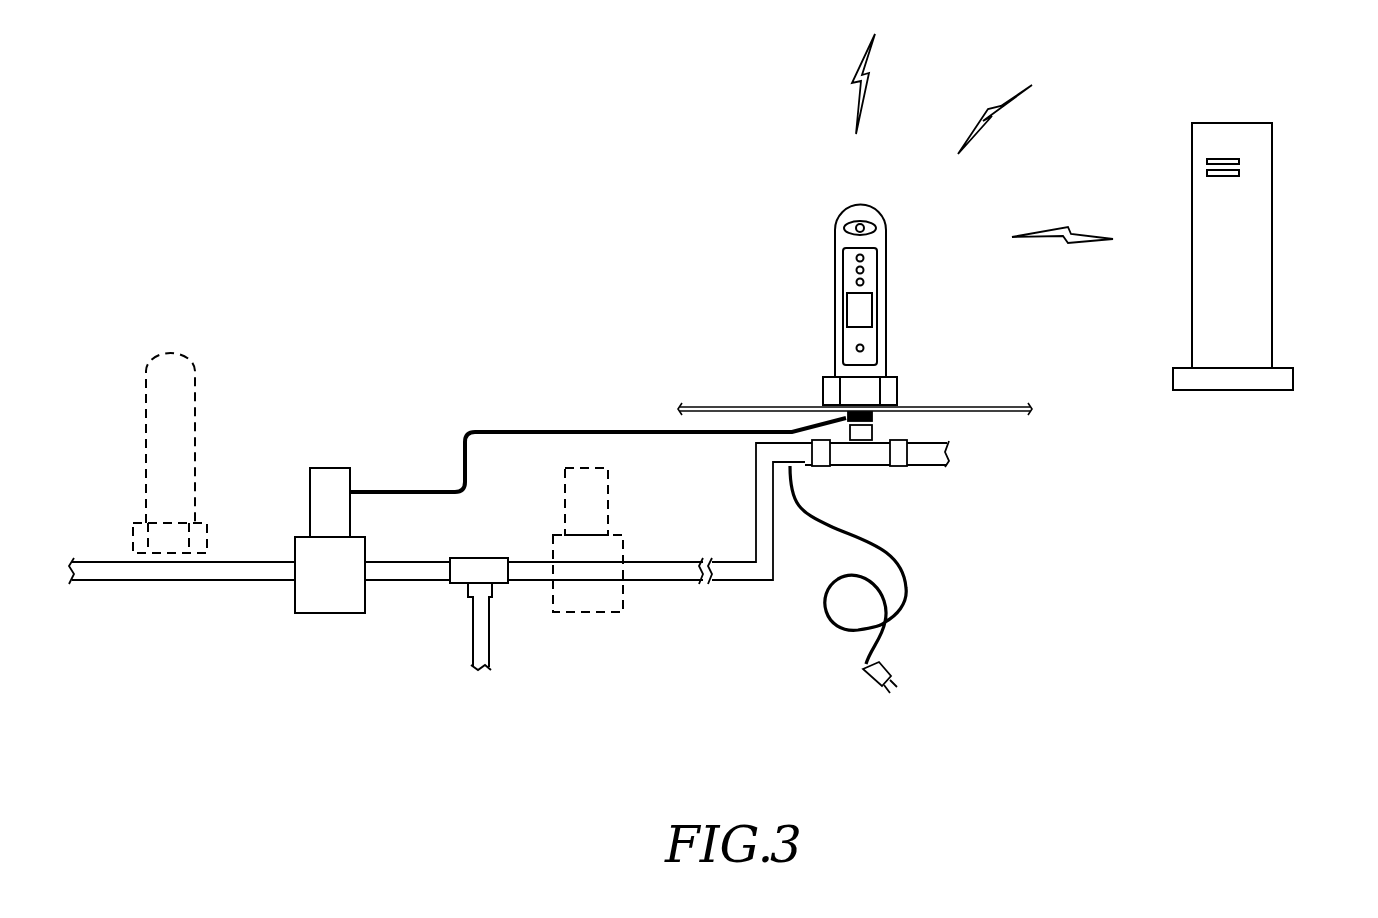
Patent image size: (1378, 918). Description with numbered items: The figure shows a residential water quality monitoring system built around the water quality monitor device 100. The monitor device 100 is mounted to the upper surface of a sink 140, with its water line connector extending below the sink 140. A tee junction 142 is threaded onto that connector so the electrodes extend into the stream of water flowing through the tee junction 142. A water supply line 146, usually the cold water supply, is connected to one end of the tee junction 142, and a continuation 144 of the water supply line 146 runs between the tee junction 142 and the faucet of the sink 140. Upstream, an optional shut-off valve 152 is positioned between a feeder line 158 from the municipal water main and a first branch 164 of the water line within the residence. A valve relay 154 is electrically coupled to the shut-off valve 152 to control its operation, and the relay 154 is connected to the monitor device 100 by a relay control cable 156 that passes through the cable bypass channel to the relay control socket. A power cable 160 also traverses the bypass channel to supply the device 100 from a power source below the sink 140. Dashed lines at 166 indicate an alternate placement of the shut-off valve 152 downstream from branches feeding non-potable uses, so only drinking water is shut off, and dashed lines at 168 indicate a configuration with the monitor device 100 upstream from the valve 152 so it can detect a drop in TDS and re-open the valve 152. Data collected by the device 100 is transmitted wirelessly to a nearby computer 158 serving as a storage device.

The water quality monitor device 100 is at (848, 210).
The sink 140 is at (765, 408).
The tee junction 142 is at (862, 453).
The continuation of the water supply line 144 is at (932, 456).
The water supply line 146 is at (758, 567).
The shut-off valve 152 is at (330, 598).
The valve relay 154 is at (332, 482).
The relay control cable 156 is at (598, 432).
The feeder line / storage device 158 is at (168, 566).
The power cable 160 is at (912, 580).
The first branch 164 is at (477, 570).
The alternate shut-off valve position 166 is at (603, 648).
The alternate monitor device position 168 is at (213, 322).